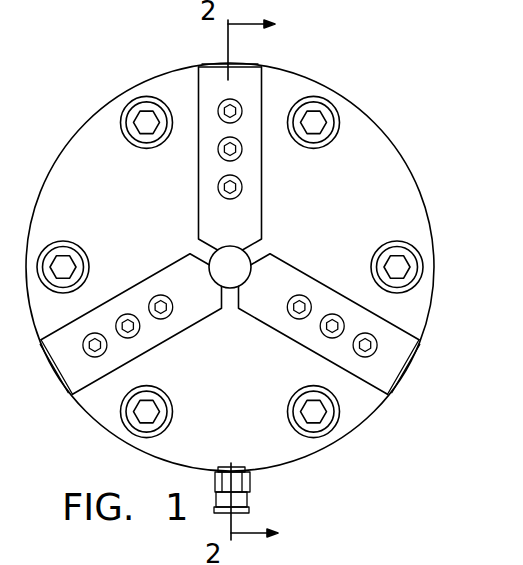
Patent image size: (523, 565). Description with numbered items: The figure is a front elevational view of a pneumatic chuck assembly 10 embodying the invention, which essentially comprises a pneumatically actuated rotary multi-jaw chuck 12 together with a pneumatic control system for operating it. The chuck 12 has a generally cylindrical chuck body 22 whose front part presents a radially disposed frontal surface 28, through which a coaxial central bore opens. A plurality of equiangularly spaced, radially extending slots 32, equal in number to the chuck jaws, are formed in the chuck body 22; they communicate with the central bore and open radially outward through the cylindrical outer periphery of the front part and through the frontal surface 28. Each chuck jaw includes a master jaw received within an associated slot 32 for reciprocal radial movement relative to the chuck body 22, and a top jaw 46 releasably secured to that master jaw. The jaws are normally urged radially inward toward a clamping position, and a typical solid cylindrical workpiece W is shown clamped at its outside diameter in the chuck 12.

The chuck assembly 10 is at (424, 129).
The chuck 12 is at (447, 184).
The chuck body 22 is at (323, 84).
The frontal surface 28 is at (278, 443).
The slots 32 is at (260, 160).
The top jaw 46 is at (222, 217).
The workpiece W is at (237, 262).